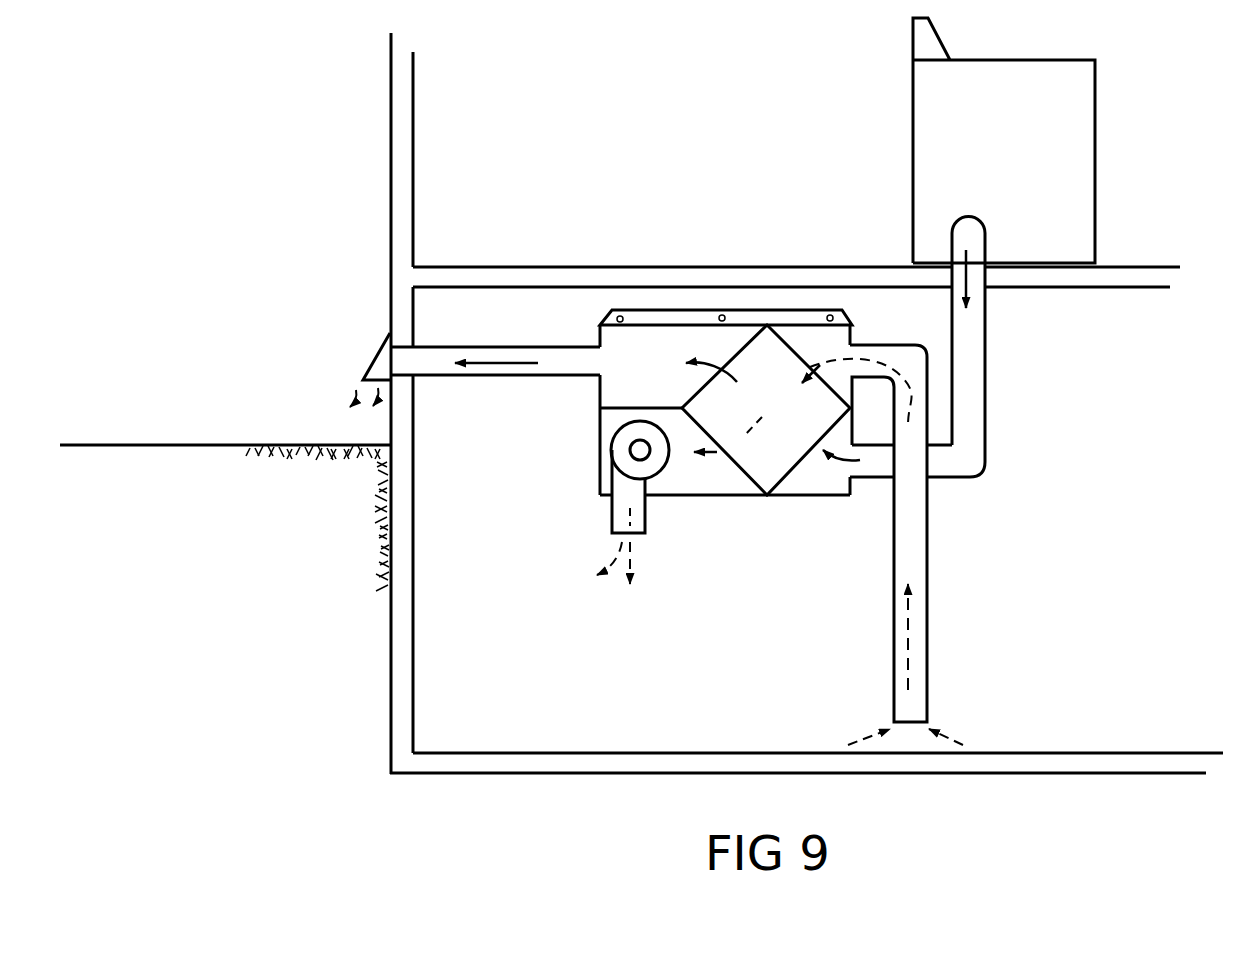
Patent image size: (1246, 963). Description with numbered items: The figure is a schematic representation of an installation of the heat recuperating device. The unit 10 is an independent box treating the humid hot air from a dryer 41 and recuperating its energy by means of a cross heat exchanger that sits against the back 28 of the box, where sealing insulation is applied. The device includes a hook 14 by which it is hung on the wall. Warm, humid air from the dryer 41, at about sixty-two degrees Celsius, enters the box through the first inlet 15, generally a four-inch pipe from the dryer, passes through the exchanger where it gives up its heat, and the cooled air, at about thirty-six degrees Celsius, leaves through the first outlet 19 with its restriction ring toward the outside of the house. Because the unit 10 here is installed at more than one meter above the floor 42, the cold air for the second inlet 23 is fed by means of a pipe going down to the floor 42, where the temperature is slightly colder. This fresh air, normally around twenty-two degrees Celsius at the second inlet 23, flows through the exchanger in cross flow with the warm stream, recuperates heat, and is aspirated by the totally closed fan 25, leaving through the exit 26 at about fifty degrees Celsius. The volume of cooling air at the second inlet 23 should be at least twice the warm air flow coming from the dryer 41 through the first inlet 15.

The box 10 is at (641, 316).
The hook 14 is at (712, 318).
The first inlet 15 is at (878, 462).
The first outlet 19 is at (572, 362).
The second inlet 23 is at (912, 698).
The fan 25 is at (623, 437).
The exit 26 is at (617, 512).
The back 28 is at (770, 462).
The dryer 41 is at (1070, 155).
The floor 42 is at (740, 760).